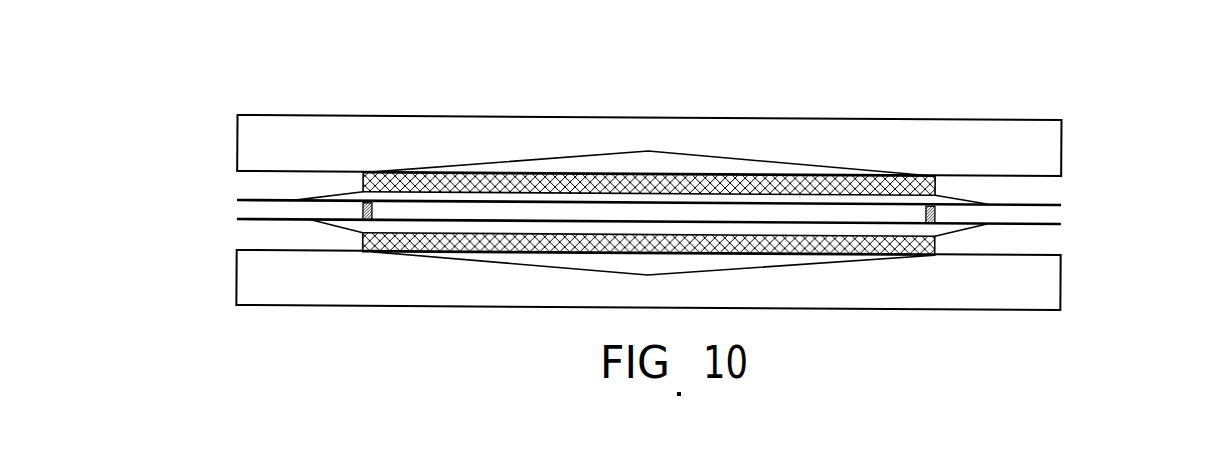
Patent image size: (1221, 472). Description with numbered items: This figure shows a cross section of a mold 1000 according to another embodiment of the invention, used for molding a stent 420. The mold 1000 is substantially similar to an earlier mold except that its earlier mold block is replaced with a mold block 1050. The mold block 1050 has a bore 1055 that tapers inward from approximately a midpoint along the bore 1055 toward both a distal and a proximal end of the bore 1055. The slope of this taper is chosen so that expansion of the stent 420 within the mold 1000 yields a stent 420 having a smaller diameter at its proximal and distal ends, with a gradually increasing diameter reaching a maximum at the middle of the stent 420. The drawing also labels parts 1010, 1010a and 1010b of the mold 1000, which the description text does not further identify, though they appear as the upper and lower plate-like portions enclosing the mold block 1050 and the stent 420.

The mold 1000 is at (278, 63).
The pressing plate unit 1010 is at (987, 199).
The upper pressing plate 1010a is at (1057, 116).
The lower pressing plate 1010b is at (1061, 293).
The mold block 1050 is at (797, 158).
The bore 1055 is at (683, 170).
The stent 420 is at (362, 243).